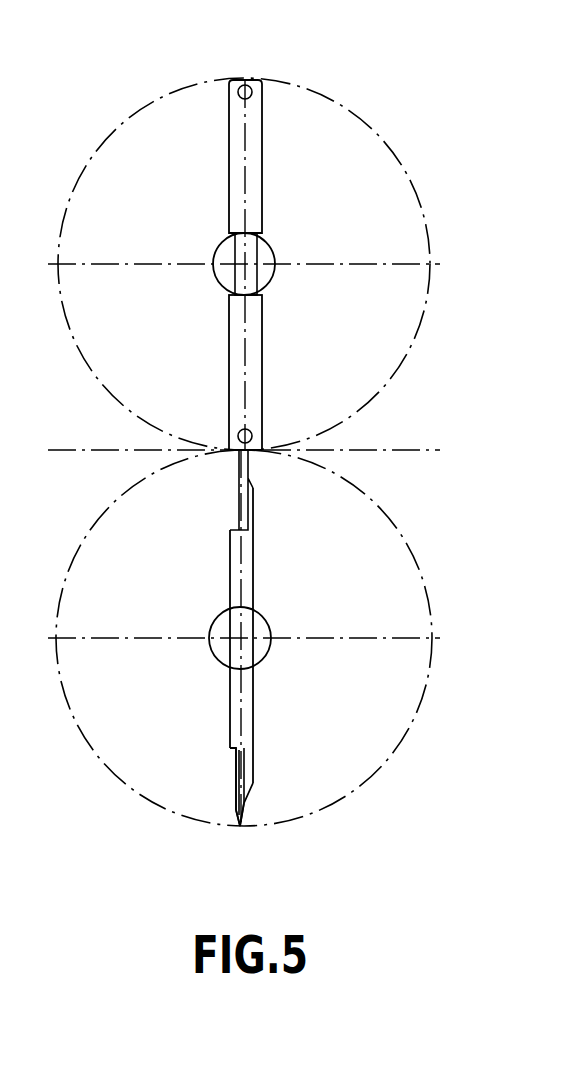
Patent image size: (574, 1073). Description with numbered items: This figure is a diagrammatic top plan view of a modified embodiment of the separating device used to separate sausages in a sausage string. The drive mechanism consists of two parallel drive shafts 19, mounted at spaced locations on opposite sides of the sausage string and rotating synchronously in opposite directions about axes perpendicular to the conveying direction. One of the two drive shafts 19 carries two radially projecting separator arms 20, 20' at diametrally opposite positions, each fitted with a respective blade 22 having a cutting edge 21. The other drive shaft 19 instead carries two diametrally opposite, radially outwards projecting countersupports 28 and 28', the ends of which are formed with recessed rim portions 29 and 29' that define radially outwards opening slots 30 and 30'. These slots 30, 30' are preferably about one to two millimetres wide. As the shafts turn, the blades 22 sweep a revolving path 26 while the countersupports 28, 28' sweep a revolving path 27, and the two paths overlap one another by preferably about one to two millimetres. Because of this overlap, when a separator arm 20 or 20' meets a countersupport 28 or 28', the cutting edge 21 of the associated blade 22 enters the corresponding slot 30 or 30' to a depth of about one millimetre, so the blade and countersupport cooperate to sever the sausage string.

The drive shaft 19 is at (262, 270).
The separator arm 20 is at (201, 635).
The separator arm 20' is at (201, 759).
The cutting edge 21 is at (242, 828).
The blade 22 is at (240, 485).
The revolving path 26 is at (413, 185).
The revolving path 27 is at (418, 570).
The countersupport 28 is at (208, 156).
The countersupport 28' is at (208, 372).
The recessed rim portion 29 is at (322, 70).
The recessed rim portion 29' is at (297, 392).
The slot 30 is at (266, 40).
The slot 30' is at (290, 489).